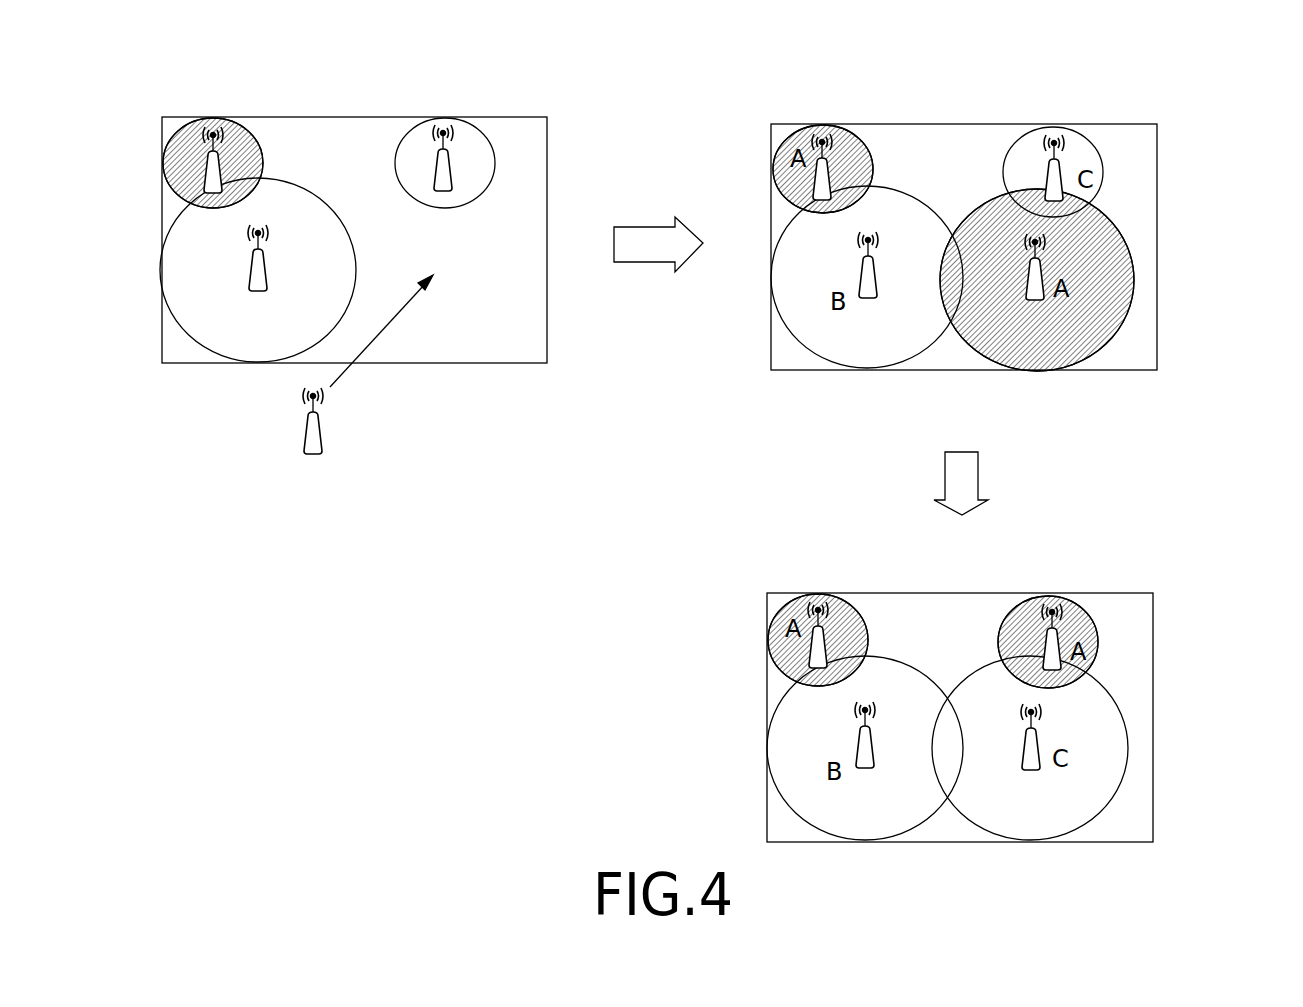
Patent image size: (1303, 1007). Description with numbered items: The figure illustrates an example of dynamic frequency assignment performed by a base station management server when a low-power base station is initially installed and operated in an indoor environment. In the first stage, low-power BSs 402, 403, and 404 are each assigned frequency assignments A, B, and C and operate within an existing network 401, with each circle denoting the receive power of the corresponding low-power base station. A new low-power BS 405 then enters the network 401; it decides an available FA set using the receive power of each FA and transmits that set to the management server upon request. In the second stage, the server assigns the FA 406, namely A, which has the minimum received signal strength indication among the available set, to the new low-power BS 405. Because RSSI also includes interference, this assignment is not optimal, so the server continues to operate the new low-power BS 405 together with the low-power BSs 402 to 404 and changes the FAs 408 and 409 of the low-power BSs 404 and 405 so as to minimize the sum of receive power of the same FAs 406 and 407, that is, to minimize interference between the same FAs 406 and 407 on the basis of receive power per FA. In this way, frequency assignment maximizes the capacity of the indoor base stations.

The network 401 is at (336, 229).
The low-power BS 402 is at (220, 183).
The low-power BS 403 is at (255, 293).
The low-power BS 404 is at (455, 172).
The new low-power BS 405 is at (365, 381).
The FA 406 is at (1075, 268).
The same FA 407 is at (843, 633).
The FA 408 is at (1078, 628).
The FA 409 is at (1073, 758).